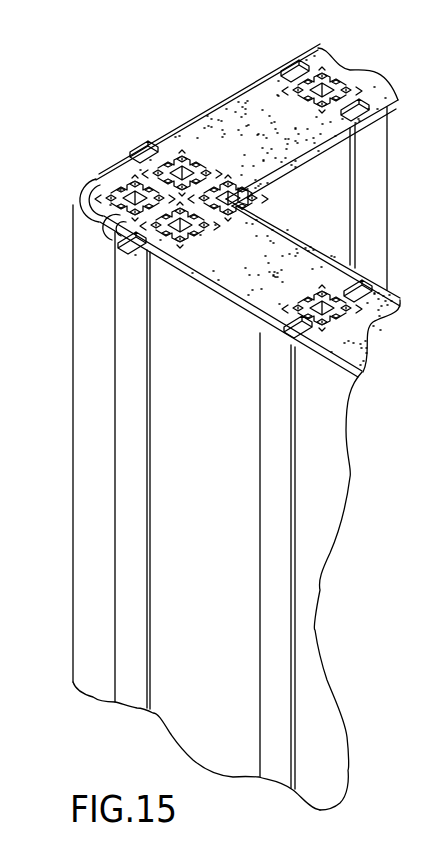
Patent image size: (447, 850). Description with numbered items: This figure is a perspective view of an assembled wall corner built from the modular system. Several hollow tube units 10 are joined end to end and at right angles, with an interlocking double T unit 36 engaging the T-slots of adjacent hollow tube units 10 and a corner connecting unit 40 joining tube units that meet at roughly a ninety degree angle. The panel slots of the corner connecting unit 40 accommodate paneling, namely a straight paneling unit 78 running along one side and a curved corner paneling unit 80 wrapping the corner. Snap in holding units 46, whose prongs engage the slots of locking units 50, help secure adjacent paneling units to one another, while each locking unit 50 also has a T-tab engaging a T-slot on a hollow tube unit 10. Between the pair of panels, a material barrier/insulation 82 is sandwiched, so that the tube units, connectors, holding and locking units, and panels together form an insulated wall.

The hollow tube unit 10 is at (337, 82).
The interlocking double T unit 36 is at (183, 143).
The corner connecting unit 40 is at (238, 196).
The snap in holding unit 46 is at (130, 152).
The locking unit 50 is at (166, 147).
The straight paneling unit 78 is at (171, 148).
The curved corner paneling unit 80 is at (98, 175).
The material barrier/insulation 82 is at (213, 110).